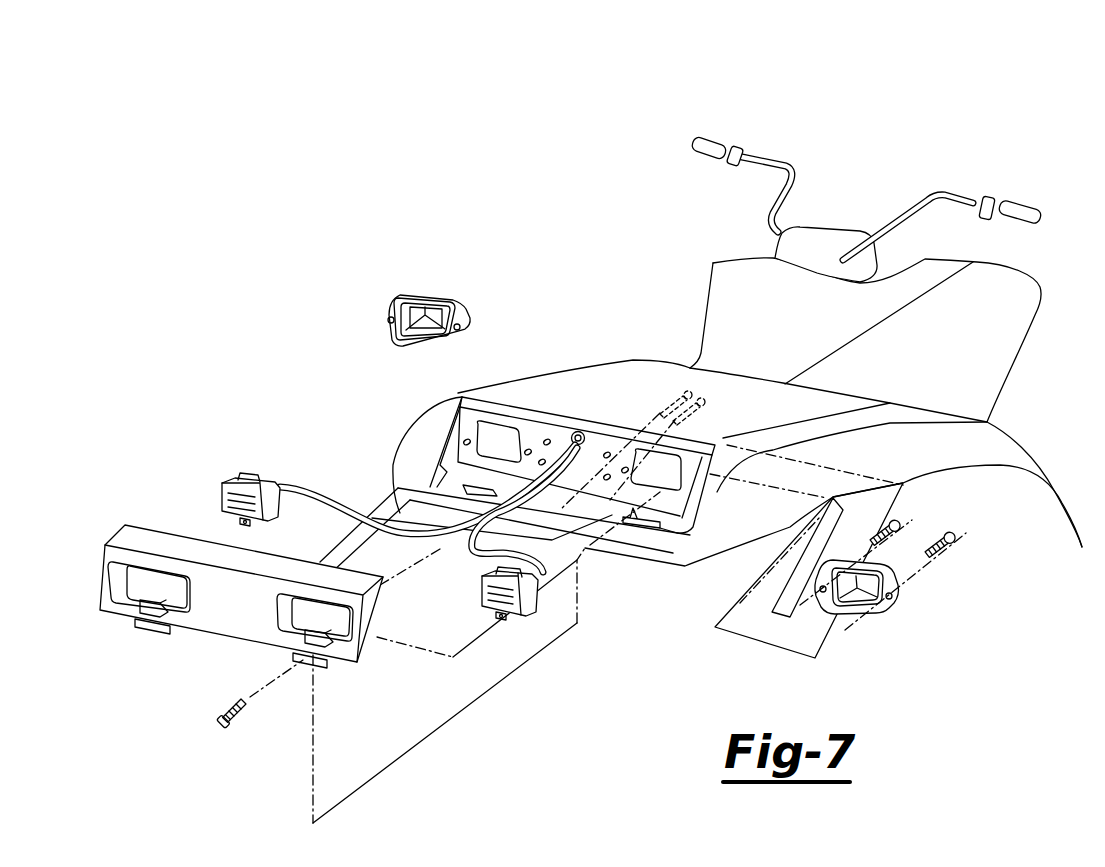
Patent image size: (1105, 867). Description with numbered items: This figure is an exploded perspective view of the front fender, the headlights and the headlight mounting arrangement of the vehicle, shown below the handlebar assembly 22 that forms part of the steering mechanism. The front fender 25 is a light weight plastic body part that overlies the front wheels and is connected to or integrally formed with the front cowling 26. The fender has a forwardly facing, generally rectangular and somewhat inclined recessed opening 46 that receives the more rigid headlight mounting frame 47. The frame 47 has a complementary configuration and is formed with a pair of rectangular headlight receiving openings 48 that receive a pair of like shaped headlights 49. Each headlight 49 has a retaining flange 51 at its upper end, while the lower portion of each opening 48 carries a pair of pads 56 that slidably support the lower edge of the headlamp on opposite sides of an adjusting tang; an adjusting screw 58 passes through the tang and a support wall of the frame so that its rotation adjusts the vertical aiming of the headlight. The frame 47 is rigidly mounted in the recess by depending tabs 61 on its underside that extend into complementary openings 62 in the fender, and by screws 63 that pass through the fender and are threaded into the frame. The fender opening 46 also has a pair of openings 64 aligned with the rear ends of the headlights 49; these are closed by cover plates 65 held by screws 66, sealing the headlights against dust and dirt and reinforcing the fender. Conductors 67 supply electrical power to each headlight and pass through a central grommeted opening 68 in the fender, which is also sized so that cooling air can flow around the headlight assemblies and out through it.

The handlebar assembly 22 is at (791, 166).
The front fender 25 is at (628, 360).
The front cowling 26 is at (850, 328).
The recessed opening 46 is at (667, 537).
The headlight mounting frame 47 is at (215, 642).
The headlight receiving openings 48 is at (133, 587).
The headlights 49 is at (222, 482).
The retaining flange 51 is at (253, 473).
The pads 56 is at (142, 610).
The adjusting screw 58 is at (226, 726).
The depending tabs 61 is at (157, 635).
The openings 62 is at (432, 478).
The screws 63 is at (717, 395).
The openings 64 is at (490, 424).
The cover plates 65 is at (460, 300).
The screws 66 is at (900, 520).
The conductors 67 is at (344, 501).
The grommeted opening 68 is at (578, 431).